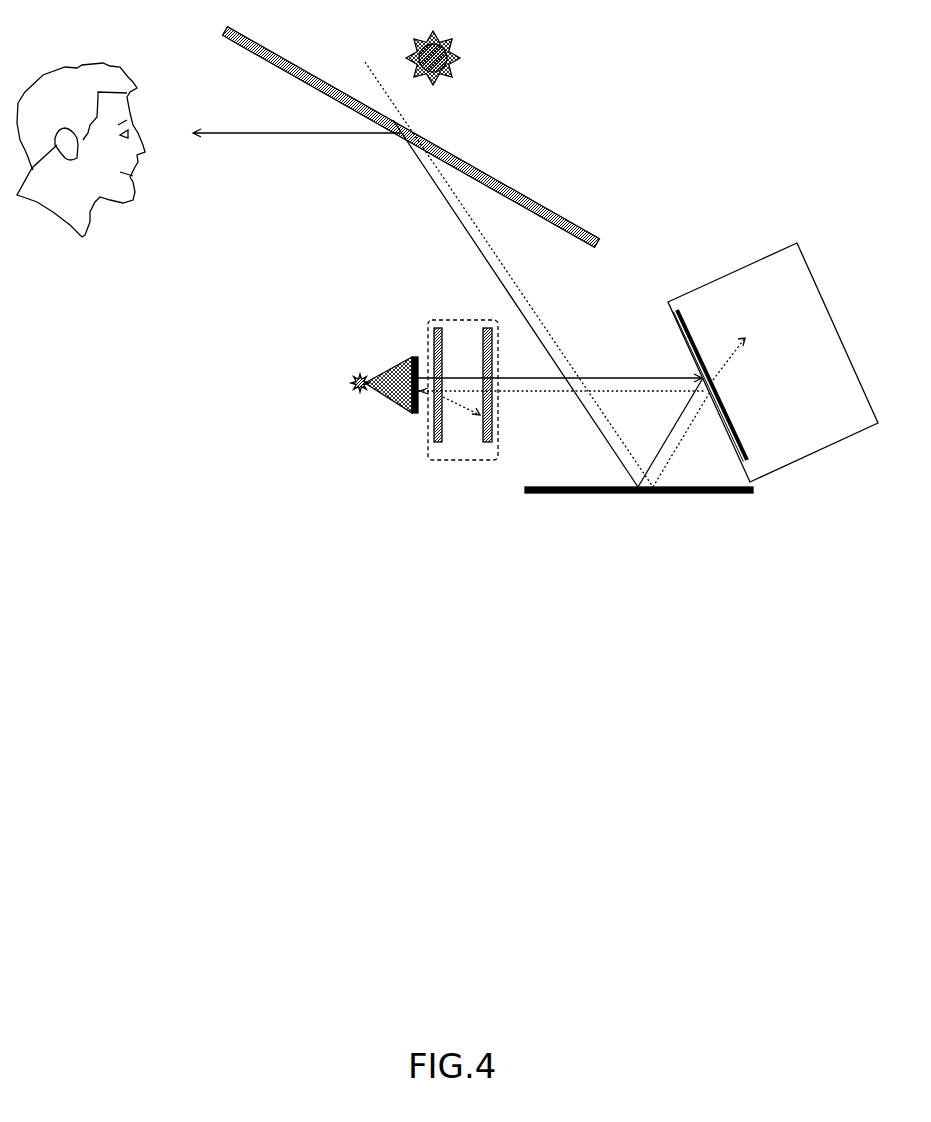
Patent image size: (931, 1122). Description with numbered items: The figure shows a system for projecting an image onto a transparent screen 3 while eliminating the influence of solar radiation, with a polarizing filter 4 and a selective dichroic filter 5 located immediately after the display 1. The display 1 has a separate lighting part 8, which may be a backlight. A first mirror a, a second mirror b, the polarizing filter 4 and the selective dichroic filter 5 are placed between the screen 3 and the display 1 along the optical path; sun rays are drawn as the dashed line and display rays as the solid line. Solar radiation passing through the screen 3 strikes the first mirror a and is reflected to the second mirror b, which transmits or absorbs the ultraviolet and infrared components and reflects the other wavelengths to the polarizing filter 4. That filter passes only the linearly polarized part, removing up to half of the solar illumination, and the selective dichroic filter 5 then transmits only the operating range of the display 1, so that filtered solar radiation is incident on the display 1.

The display 1 is at (412, 415).
The screen 3 is at (482, 170).
The polarizing filter 4 is at (465, 328).
The selective dichroic filter 5 is at (438, 333).
The lighting part 8 is at (350, 383).
The first mirror a is at (723, 497).
The second mirror b is at (737, 433).